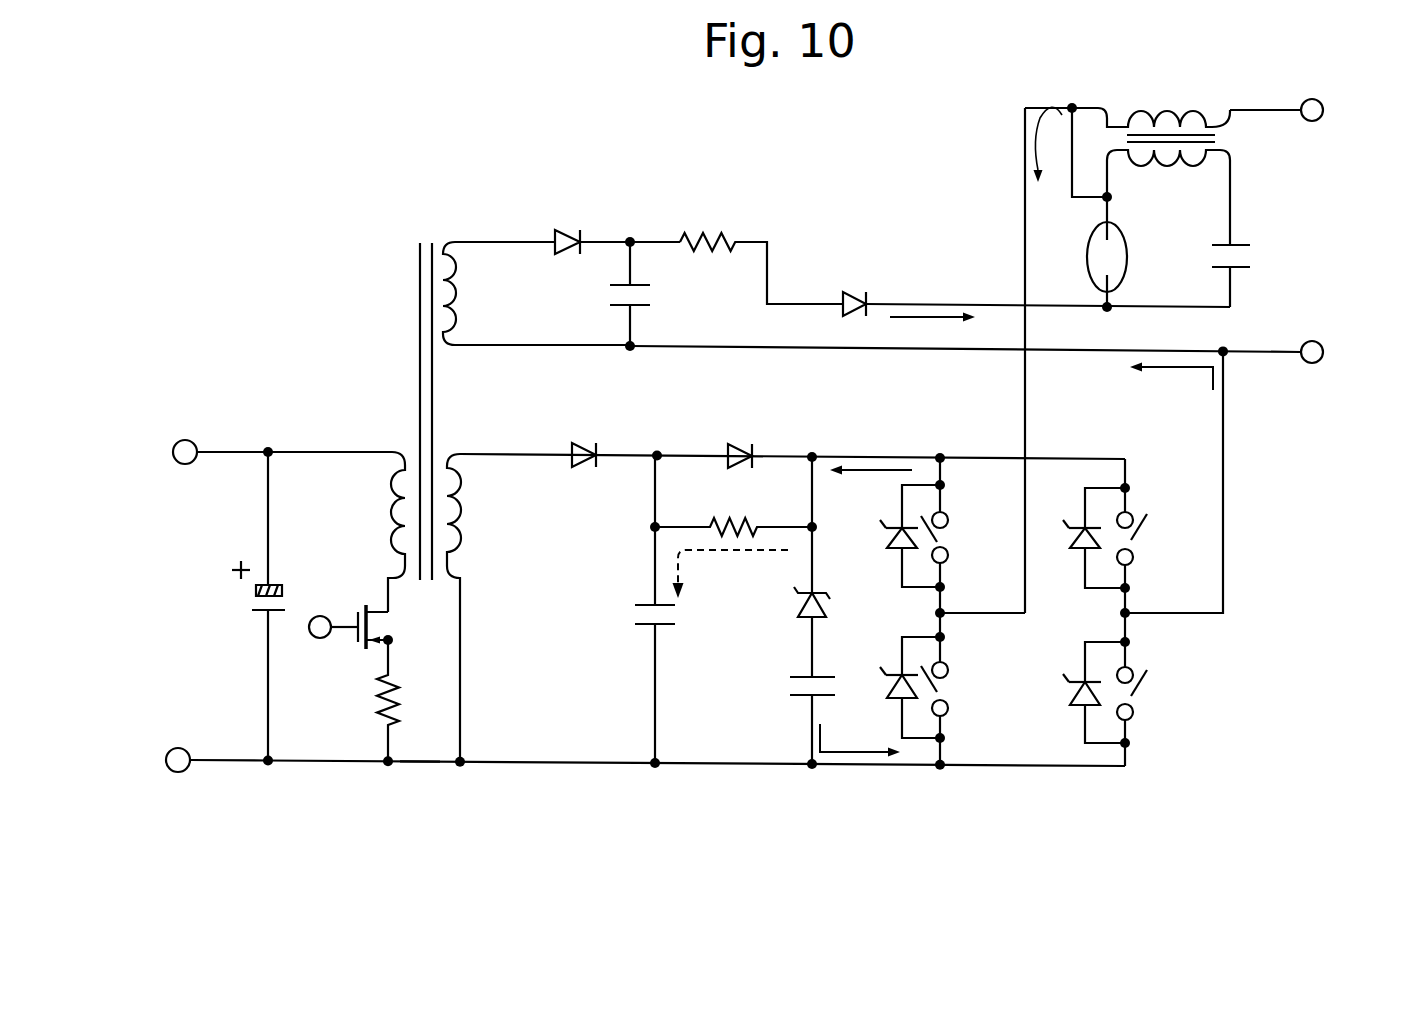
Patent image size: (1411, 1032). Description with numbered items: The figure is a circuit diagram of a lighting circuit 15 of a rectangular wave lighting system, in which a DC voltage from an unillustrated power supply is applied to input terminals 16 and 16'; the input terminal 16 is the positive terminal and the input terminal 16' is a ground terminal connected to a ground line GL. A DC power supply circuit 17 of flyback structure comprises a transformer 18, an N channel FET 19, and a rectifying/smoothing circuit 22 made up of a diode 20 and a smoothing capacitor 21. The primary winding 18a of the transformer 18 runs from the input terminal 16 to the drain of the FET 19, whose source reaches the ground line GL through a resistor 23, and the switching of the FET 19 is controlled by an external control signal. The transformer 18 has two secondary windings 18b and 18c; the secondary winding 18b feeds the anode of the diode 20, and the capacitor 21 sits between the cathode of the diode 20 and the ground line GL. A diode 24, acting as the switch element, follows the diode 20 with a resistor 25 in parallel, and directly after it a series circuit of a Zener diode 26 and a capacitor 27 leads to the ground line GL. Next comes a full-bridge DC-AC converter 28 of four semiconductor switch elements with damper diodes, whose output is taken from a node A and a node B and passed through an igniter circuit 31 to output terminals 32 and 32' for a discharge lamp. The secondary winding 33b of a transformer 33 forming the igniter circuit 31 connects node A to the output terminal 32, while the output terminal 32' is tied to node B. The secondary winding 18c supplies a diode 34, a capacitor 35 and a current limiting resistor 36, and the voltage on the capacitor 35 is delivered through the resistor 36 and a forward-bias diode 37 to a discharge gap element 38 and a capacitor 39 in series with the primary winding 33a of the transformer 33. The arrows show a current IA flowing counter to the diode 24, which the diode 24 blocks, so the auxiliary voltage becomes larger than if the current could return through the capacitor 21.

The lighting circuit 15 is at (335, 210).
The input terminal 16 is at (205, 418).
The input terminal 16' is at (200, 728).
The DC power supply circuit 17 is at (488, 778).
The ground line GL is at (422, 764).
The transformer 18 is at (280, 275).
The primary winding 18a is at (401, 450).
The secondary winding 18b is at (447, 452).
The secondary winding 18c is at (422, 255).
The N channel FET 19 is at (355, 672).
The diode 20 is at (592, 468).
The smoothing capacitor 21 is at (645, 604).
The rectifying/smoothing circuit 22 is at (548, 545).
The resistor 23 is at (390, 702).
The diode 24 is at (735, 443).
The resistor 25 is at (742, 525).
The Zener diode 26 is at (814, 598).
The capacitor 27 is at (800, 700).
The DC-AC converter 28 is at (1026, 800).
The igniter circuit 31 is at (1283, 268).
The output terminal 32 is at (1284, 77).
The output terminal 32' is at (1315, 393).
The transformer 33 is at (1338, 155).
The primary winding 33a is at (1232, 152).
The secondary winding 33b is at (1232, 128).
The diode 34 is at (566, 230).
The capacitor 35 is at (617, 310).
The current limiting resistor 36 is at (728, 240).
The diode 37 is at (852, 290).
The discharge gap element 38 is at (1092, 276).
The capacitor 39 is at (1216, 245).
The current IA is at (871, 481).
The node A is at (964, 612).
The node B is at (1156, 490).